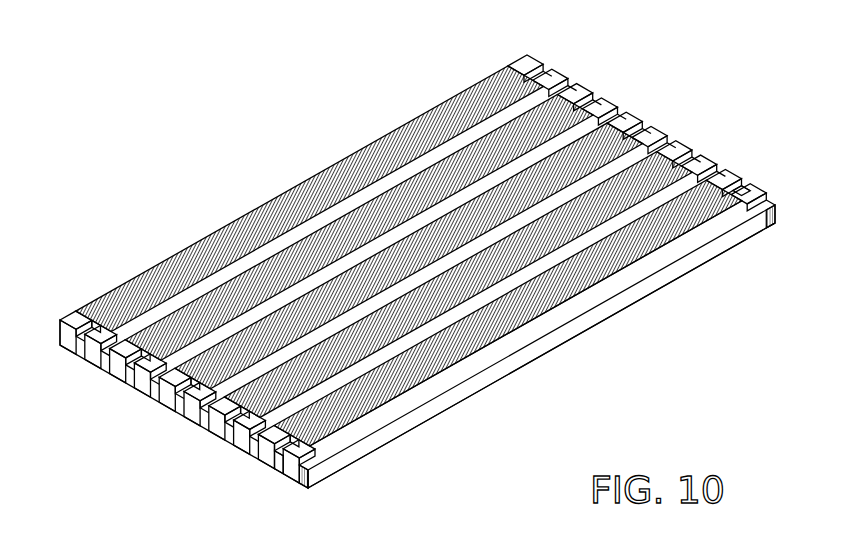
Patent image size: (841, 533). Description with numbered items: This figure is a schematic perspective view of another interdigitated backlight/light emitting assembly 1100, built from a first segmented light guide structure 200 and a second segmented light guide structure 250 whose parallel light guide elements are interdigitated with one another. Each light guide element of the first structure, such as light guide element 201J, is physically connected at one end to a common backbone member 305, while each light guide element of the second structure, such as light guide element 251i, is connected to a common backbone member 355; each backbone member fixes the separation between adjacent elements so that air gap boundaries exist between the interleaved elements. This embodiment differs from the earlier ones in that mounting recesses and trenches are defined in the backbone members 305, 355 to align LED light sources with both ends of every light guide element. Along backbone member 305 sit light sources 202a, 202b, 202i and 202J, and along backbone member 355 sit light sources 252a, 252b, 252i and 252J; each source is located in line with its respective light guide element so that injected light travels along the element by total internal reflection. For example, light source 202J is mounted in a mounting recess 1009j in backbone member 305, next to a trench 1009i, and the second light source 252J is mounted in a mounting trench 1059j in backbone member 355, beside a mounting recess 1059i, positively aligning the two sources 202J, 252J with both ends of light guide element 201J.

The interdigitated light emitting assembly 1100 is at (424, 267).
The first segmented light guide structure 200 is at (443, 287).
The second segmented light guide structure 250 is at (422, 267).
The LED light source 202a is at (60, 342).
The LED light source 202b is at (86, 345).
The LED light source 202i is at (259, 455).
The light source 202J is at (285, 463).
The LED light source 252a is at (540, 61).
The LED light source 252b is at (563, 80).
The LED light source 252i is at (731, 175).
The second light source 252J is at (762, 195).
The light guide element 251i is at (452, 333).
The light guide element 201J is at (450, 370).
The trench 1009i is at (268, 434).
The mounting recess 1009j is at (307, 452).
The mounting recess 1059i is at (729, 172).
The mounting trench 1059j is at (777, 206).
The common backbone member 305 is at (312, 477).
The common backbone member 355 is at (775, 223).